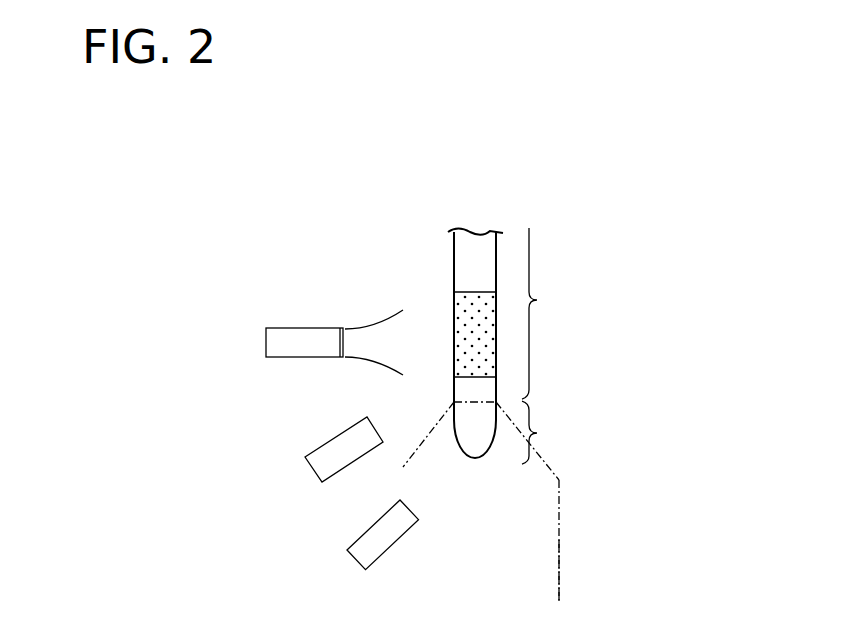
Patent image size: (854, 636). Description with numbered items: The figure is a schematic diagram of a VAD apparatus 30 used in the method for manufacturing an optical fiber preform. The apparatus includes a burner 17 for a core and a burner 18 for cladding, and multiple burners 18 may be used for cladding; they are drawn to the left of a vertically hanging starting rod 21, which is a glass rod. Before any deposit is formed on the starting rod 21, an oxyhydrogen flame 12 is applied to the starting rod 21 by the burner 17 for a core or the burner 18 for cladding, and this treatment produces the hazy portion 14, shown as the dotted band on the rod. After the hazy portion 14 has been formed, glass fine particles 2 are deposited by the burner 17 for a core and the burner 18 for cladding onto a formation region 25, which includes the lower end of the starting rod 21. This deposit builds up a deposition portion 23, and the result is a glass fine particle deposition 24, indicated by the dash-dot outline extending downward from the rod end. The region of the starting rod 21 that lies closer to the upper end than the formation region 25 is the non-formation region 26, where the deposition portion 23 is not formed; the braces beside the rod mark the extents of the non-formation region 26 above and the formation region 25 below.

The glass fine particles 2 is at (589, 541).
The oxyhydrogen flame 12 is at (370, 318).
The hazy portion 14 is at (437, 312).
The burner for a core 17 is at (345, 548).
The burner for cladding 18 is at (291, 416).
The starting rod 21 is at (440, 330).
The deposition portion 23 is at (595, 571).
The glass fine particle deposition 24 is at (525, 441).
The formation region 25 is at (547, 432).
The non-formation region 26 is at (547, 313).
The VAD apparatus 30 is at (282, 264).